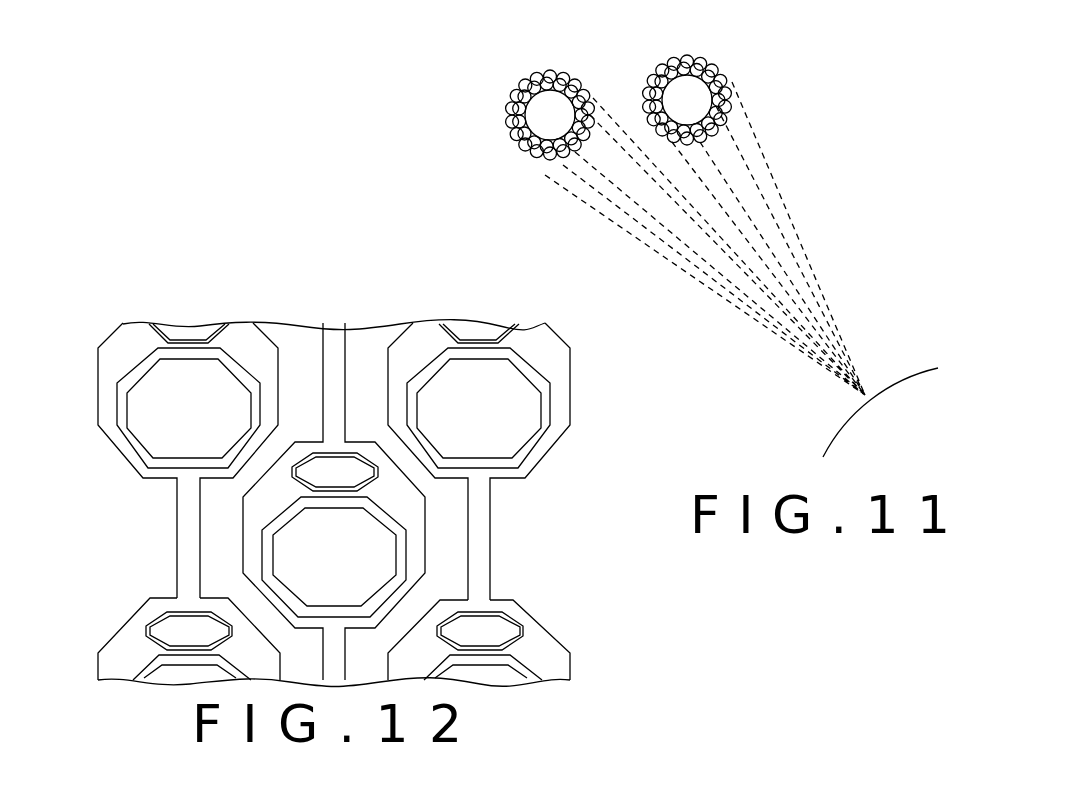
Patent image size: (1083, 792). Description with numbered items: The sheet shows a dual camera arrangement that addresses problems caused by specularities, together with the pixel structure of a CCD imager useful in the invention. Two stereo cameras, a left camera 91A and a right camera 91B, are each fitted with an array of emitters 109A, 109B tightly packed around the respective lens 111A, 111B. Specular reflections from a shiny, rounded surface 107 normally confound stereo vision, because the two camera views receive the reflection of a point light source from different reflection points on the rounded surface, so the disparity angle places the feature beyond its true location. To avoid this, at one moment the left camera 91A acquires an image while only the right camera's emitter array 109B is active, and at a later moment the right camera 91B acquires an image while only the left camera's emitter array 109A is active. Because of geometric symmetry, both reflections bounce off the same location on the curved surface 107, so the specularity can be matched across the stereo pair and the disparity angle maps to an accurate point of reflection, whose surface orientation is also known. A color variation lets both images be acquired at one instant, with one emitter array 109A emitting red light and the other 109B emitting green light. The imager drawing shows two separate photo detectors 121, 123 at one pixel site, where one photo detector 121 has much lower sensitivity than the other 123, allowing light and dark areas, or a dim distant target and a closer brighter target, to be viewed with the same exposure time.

In FIG. 11, the left camera 91A is at (491, 148).
In FIG. 11, the emitter array of left camera 109A is at (508, 132).
In FIG. 11, the lens of left camera 111A is at (561, 120).
In FIG. 11, the right camera 91B is at (725, 73).
In FIG. 11, the emitter array of right camera 109B is at (678, 52).
In FIG. 11, the lens of right camera 111B is at (695, 105).
In FIG. 11, the surface 107 is at (902, 373).
In FIG. 12, the photo detector 121 is at (350, 472).
In FIG. 12, the photo detector 123 is at (363, 547).